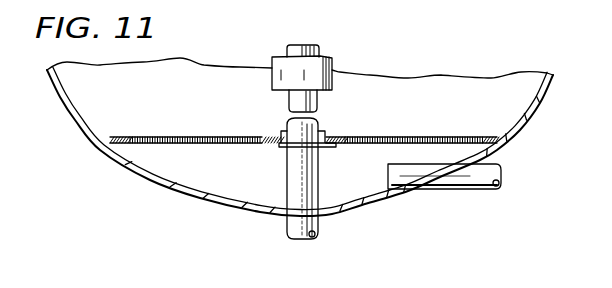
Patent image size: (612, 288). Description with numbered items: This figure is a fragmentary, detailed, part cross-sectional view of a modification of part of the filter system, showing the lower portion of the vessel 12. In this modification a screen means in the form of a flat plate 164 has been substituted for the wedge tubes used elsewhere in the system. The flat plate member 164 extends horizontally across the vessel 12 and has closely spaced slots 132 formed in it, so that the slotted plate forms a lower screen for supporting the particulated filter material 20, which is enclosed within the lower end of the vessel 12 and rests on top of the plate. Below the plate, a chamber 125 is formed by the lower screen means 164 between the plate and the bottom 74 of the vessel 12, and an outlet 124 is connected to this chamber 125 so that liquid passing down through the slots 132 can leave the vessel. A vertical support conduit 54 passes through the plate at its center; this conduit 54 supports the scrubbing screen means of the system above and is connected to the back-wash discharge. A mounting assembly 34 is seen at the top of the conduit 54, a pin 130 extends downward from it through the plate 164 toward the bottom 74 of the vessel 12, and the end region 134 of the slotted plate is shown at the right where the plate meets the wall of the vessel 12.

The vessel 12 is at (86, 137).
The particulated filter material 20 is at (476, 73).
The mounting block assembly 34 is at (341, 58).
The vertical support conduit 54 is at (290, 97).
The bottom of vessel 74 is at (214, 194).
The outlet 124 is at (496, 190).
The chamber 125 is at (192, 158).
The pin 130 is at (329, 130).
The slots 132 is at (403, 136).
The bar end wedge 134 is at (484, 134).
The flat plate 164 is at (212, 126).